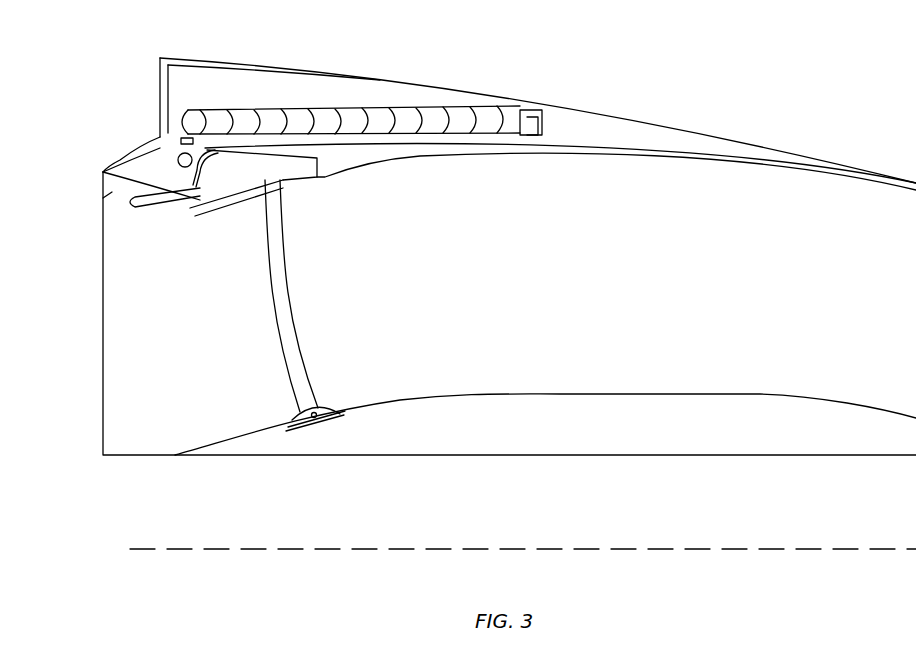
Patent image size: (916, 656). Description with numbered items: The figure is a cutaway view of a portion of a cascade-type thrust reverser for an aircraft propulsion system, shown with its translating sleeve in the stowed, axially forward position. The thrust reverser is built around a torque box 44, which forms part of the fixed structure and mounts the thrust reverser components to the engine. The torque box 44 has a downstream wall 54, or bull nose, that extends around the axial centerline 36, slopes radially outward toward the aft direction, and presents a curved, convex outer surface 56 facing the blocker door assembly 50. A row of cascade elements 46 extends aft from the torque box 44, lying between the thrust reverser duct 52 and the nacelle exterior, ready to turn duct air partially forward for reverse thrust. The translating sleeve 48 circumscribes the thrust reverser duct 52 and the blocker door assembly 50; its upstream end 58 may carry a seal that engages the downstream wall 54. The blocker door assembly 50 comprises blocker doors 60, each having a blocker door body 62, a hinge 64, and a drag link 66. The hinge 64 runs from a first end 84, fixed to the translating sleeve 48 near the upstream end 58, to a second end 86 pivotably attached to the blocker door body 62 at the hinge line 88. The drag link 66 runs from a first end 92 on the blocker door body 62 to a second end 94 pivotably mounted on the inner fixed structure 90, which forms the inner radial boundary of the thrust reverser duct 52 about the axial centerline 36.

The axial centerline 36 is at (818, 549).
The torque box 44 is at (135, 142).
The cascade elements 46 is at (371, 110).
The translating sleeve 48 is at (305, 145).
The blocker door assembly 50 is at (213, 216).
The thrust reverser duct 52 is at (509, 313).
The downstream wall 54 is at (118, 212).
The outer surface 56 is at (106, 208).
The upstream end 58 is at (196, 136).
The blocker doors 60 is at (237, 142).
The blocker door body 62 is at (103, 173).
The hinge 64 is at (168, 168).
The drag link 66 is at (280, 320).
The first end 84 is at (228, 162).
The second end 86 is at (214, 192).
The hinge line 88 is at (198, 205).
The inner fixed structure 90 is at (448, 418).
The first end 92 is at (292, 190).
The second end 94 is at (289, 425).